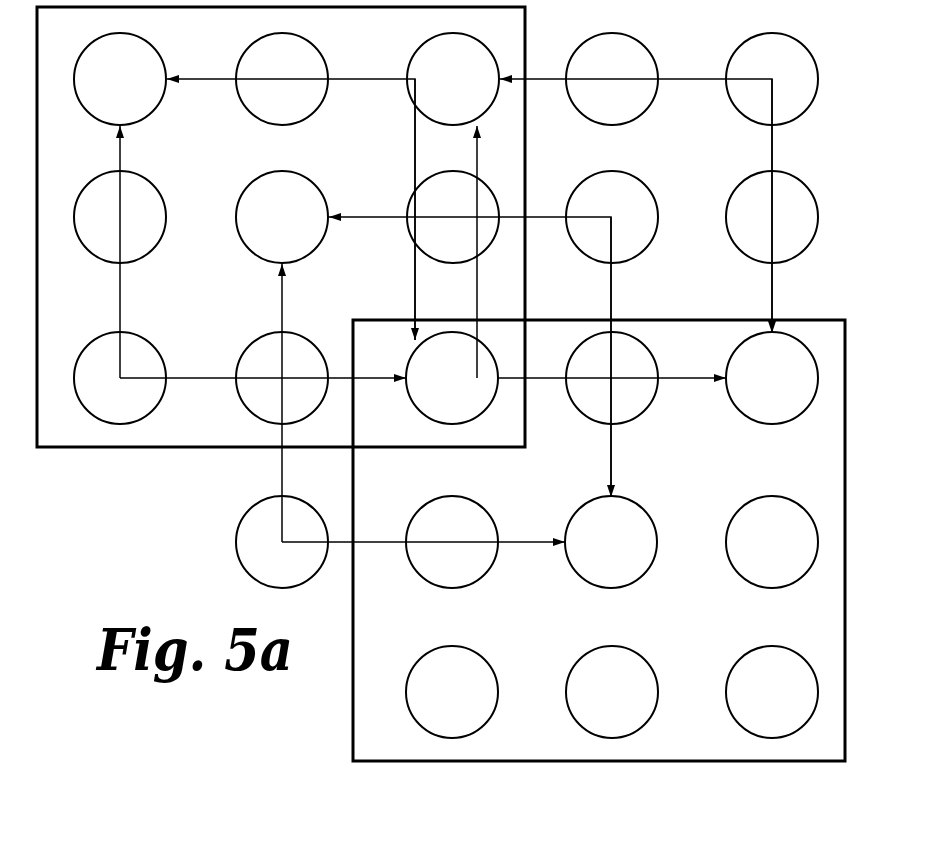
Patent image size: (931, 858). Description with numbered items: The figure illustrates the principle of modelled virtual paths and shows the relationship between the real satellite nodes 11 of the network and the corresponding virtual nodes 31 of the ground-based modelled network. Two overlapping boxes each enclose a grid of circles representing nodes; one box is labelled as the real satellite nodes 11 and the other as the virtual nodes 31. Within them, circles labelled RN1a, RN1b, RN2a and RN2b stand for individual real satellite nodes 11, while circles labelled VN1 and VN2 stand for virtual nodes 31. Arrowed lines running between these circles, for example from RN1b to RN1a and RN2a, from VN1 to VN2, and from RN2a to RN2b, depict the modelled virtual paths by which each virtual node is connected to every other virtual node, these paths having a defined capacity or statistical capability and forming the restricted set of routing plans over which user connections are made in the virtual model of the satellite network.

The non-geostationary satellites 11 is at (485, 50).
The virtual nodes 31 is at (818, 542).
The resource node RN1a is at (120, 79).
The resource node RN1b is at (453, 79).
The voter node VN1 is at (282, 217).
The resource node RN2a is at (452, 378).
The resource node RN2b is at (772, 378).
The voter node VN2 is at (611, 542).